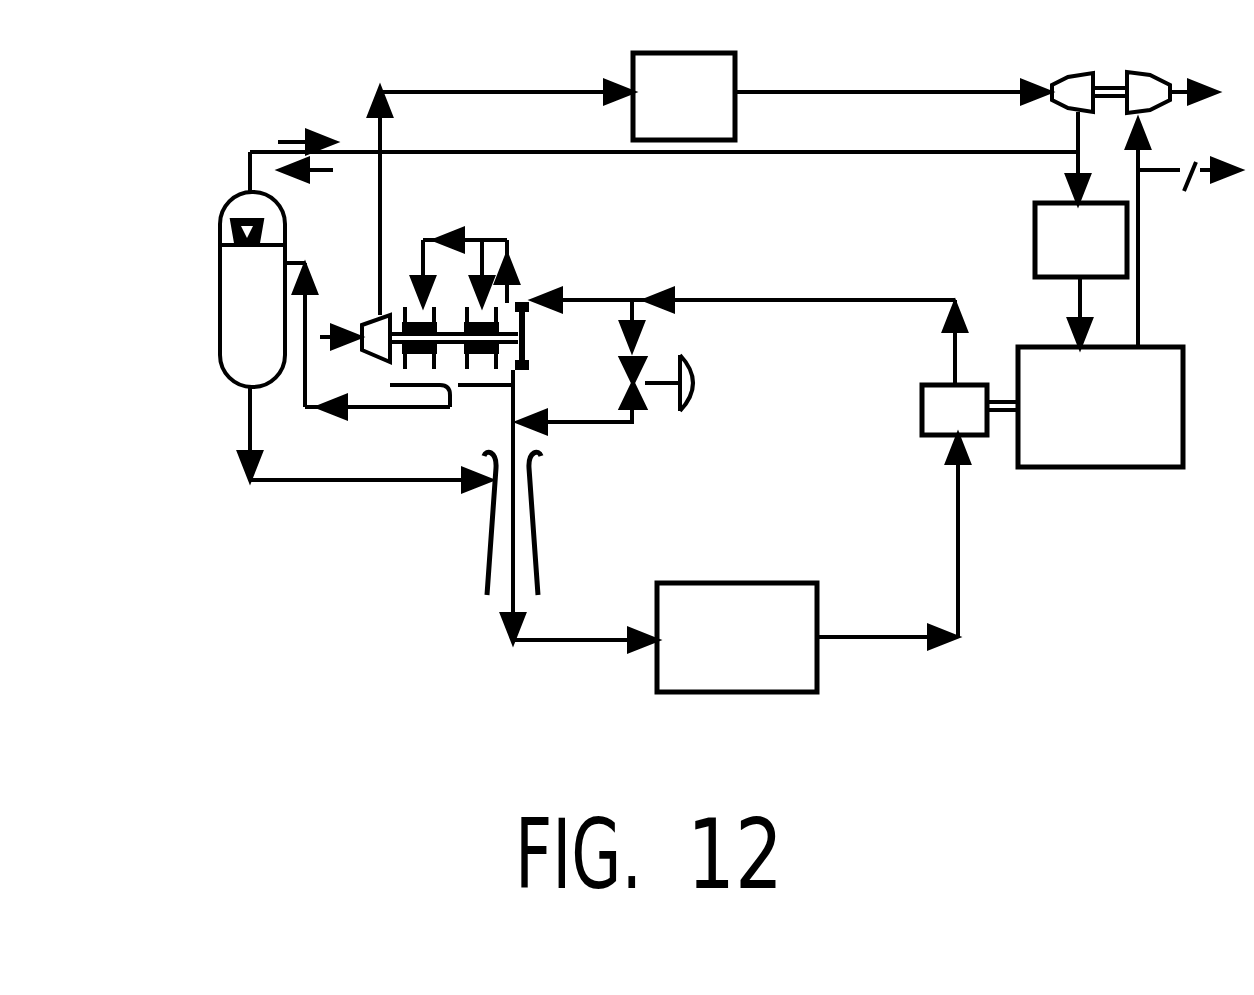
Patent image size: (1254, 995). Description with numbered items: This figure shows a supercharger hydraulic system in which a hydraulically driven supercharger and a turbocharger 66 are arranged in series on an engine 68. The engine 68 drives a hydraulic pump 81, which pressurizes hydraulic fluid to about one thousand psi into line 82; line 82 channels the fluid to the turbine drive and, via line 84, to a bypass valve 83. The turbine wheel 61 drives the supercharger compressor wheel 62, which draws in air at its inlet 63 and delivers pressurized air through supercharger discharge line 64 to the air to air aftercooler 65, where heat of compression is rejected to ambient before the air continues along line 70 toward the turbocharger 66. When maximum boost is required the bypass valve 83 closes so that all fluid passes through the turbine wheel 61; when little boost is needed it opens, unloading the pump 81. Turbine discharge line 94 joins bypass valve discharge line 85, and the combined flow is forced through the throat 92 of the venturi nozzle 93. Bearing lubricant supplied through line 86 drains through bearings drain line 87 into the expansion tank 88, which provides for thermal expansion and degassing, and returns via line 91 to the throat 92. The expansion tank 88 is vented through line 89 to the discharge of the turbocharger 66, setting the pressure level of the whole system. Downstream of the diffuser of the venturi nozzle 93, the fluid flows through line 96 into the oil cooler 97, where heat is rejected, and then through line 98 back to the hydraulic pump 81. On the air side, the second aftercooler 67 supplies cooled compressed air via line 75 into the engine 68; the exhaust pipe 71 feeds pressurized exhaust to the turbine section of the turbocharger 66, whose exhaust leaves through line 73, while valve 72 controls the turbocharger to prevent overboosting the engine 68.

The turbine wheel 61 is at (523, 302).
The supercharger compressor wheel 62 is at (380, 320).
The air inlet 63 is at (345, 345).
The supercharger discharge line 64 is at (383, 217).
The air to air aftercooler 65 is at (738, 68).
The turbocharger 66 is at (1097, 85).
The second aftercooler 67 is at (1035, 230).
The engine 68 is at (1057, 467).
The charge air line 70 is at (880, 90).
The exhaust pipe 71 is at (1140, 227).
The valve 72 is at (1200, 190).
The line 73 is at (1190, 80).
The line 75 is at (1077, 303).
The hydraulic pump 81 is at (922, 410).
The line 82 is at (820, 300).
The bypass valve 83 is at (650, 408).
The line 84 is at (633, 320).
The bypass valve discharge line 85 is at (603, 422).
The line 86 is at (462, 240).
The bearings drain line 87 is at (380, 408).
The expansion tank 88 is at (218, 357).
The line 89 is at (250, 152).
The line 91 is at (385, 483).
The throat 92 is at (535, 483).
The venturi nozzle 93 is at (487, 565).
The turbine discharge line 94 is at (518, 298).
The line 96 is at (595, 643).
The oil cooler 97 is at (817, 668).
The line 98 is at (962, 533).